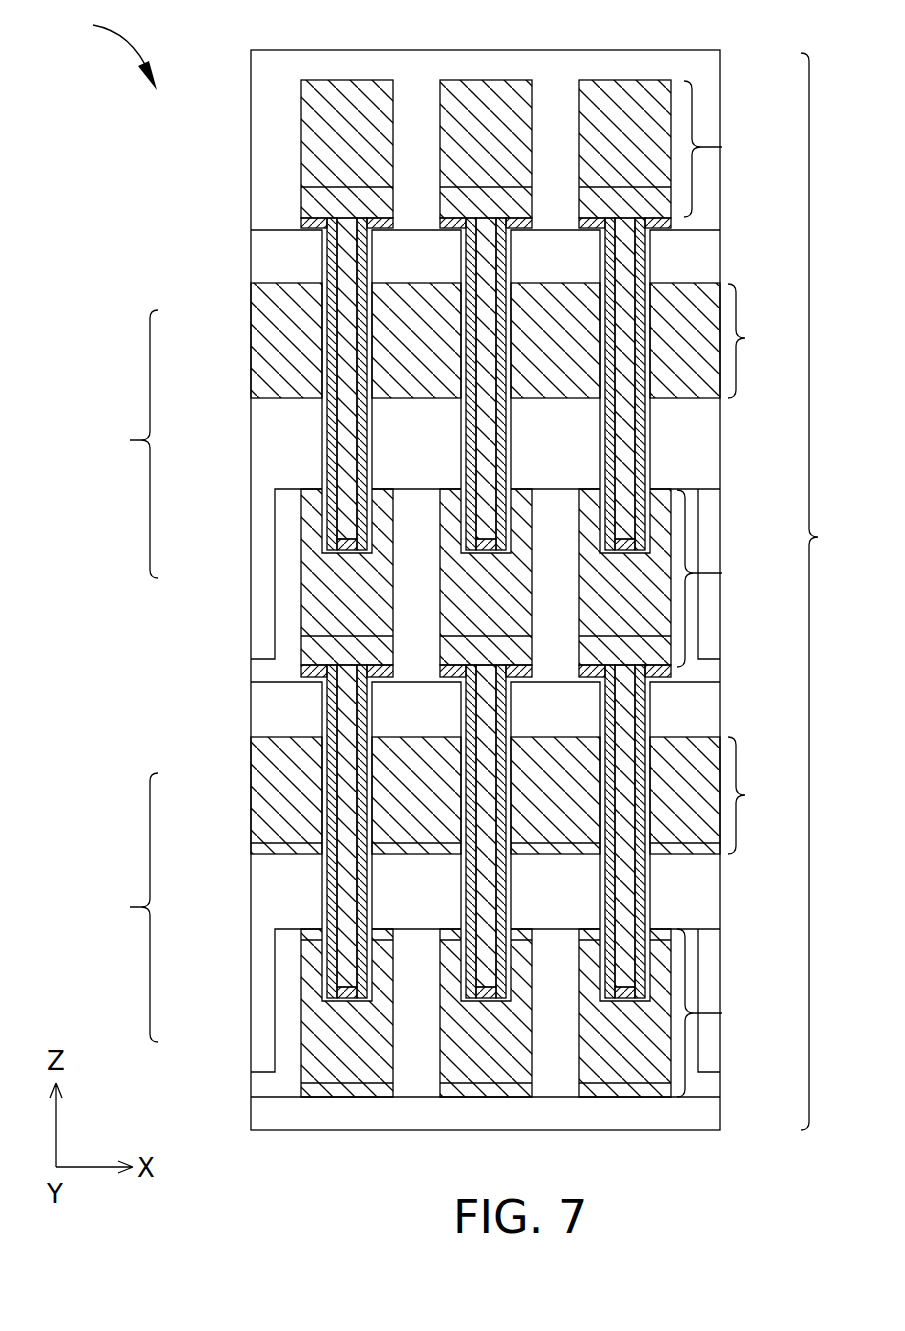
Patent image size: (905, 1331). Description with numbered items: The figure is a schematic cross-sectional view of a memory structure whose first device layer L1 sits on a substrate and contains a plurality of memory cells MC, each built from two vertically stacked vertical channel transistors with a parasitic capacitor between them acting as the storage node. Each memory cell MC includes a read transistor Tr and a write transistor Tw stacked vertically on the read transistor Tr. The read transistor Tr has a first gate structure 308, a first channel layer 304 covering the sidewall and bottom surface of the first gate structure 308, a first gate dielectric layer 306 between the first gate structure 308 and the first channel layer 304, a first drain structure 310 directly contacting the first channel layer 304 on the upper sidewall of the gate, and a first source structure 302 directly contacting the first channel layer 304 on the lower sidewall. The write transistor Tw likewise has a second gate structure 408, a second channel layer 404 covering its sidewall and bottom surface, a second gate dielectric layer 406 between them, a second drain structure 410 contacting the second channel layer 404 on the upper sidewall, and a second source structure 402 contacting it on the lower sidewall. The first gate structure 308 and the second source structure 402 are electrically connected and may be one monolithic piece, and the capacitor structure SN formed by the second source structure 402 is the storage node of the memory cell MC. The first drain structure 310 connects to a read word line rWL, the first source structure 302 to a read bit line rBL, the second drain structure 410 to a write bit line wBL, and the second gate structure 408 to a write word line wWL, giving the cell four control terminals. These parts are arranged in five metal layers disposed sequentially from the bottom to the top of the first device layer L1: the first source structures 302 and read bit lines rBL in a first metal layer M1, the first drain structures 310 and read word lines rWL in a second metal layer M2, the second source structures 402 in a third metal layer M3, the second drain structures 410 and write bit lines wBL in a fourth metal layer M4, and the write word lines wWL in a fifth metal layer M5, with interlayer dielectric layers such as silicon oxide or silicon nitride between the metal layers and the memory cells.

The memory cell MC is at (100, 49).
The write word line wWL is at (333, 133).
The write bit line wBL is at (431, 317).
The read word line rWL is at (432, 776).
The read bit line rBL is at (414, 1013).
The capacitor structure SN is at (414, 577).
The write transistor Tw is at (124, 444).
The read transistor Tr is at (130, 907).
The second source structure 402 is at (313, 562).
The second channel layer 404 is at (327, 455).
The second gate dielectric layer 406 is at (330, 416).
The second gate structure 408 is at (347, 373).
The second drain structure 410 is at (282, 339).
The first source structure 302 is at (313, 1025).
The first channel layer 304 is at (327, 918).
The first gate dielectric layer 306 is at (332, 880).
The first gate structure 308 is at (347, 821).
The first drain structure 310 is at (281, 803).
The first metal layer M1 is at (725, 1013).
The second metal layer M2 is at (757, 795).
The third metal layer M3 is at (725, 578).
The fourth metal layer M4 is at (757, 341).
The fifth metal layer M5 is at (726, 149).
The first device layer L1 is at (827, 591).